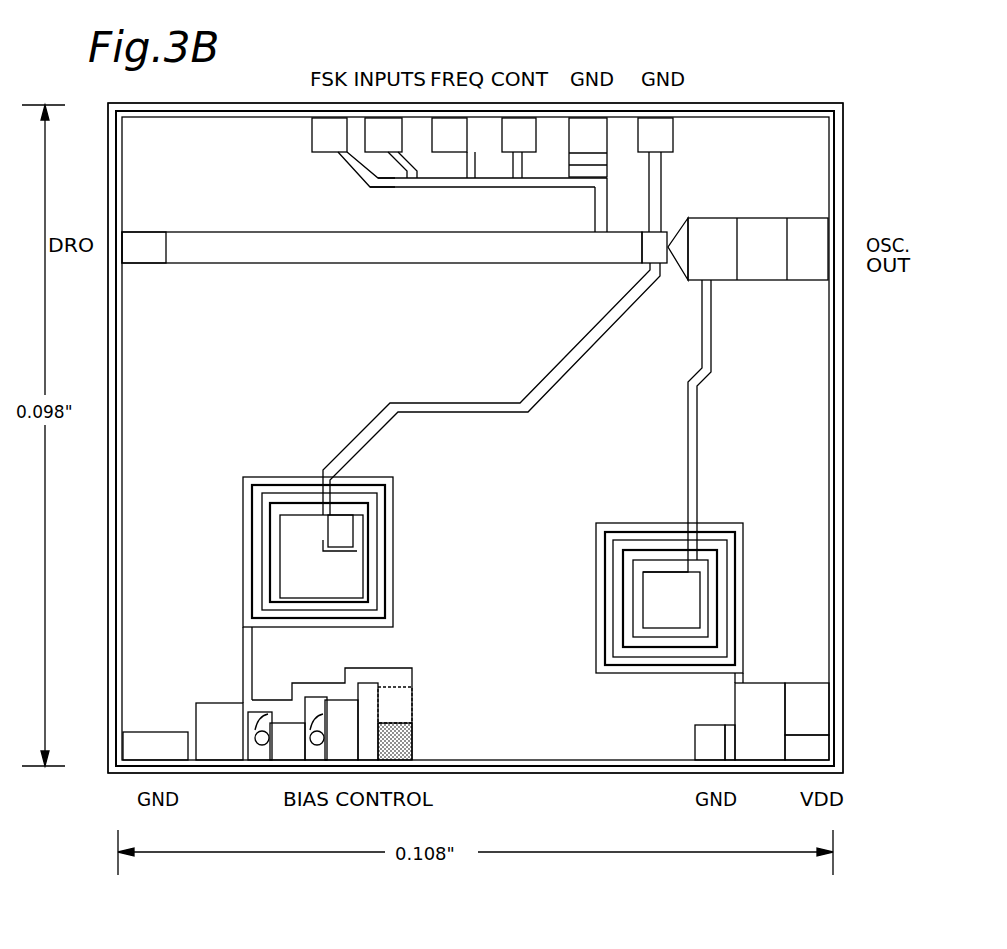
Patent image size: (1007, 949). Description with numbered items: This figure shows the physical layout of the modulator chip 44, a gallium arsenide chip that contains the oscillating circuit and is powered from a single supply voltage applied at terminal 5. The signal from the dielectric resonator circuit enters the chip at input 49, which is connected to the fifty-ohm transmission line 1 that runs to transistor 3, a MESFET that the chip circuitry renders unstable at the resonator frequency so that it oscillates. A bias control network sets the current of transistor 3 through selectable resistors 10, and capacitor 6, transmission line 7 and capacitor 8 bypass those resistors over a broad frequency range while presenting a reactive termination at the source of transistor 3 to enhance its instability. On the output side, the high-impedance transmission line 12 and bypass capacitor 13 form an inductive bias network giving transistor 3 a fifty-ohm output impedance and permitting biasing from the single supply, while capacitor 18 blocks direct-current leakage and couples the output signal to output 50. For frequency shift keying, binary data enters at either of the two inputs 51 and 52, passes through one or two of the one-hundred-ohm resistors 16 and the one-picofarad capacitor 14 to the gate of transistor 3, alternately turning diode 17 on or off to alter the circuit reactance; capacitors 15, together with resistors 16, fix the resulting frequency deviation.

The transmission line 1 is at (275, 232).
The transistor 3 is at (642, 276).
The terminal 5 is at (843, 773).
The capacitor 6 is at (205, 703).
The transmission line 7 is at (393, 487).
The capacitor 8 is at (662, 180).
The resistors 10 is at (412, 712).
The transmission line 12 is at (742, 525).
The bypass capacitor 13 is at (735, 724).
The capacitor 14 is at (597, 193).
The capacitors 15 is at (513, 165).
The resistors 16 is at (390, 188).
The diode 17 is at (612, 250).
The capacitor 18 is at (770, 218).
The chip 44 is at (738, 103).
The input 49 is at (158, 232).
The output 50 is at (815, 280).
The input 51 is at (312, 136).
The input 52 is at (402, 145).